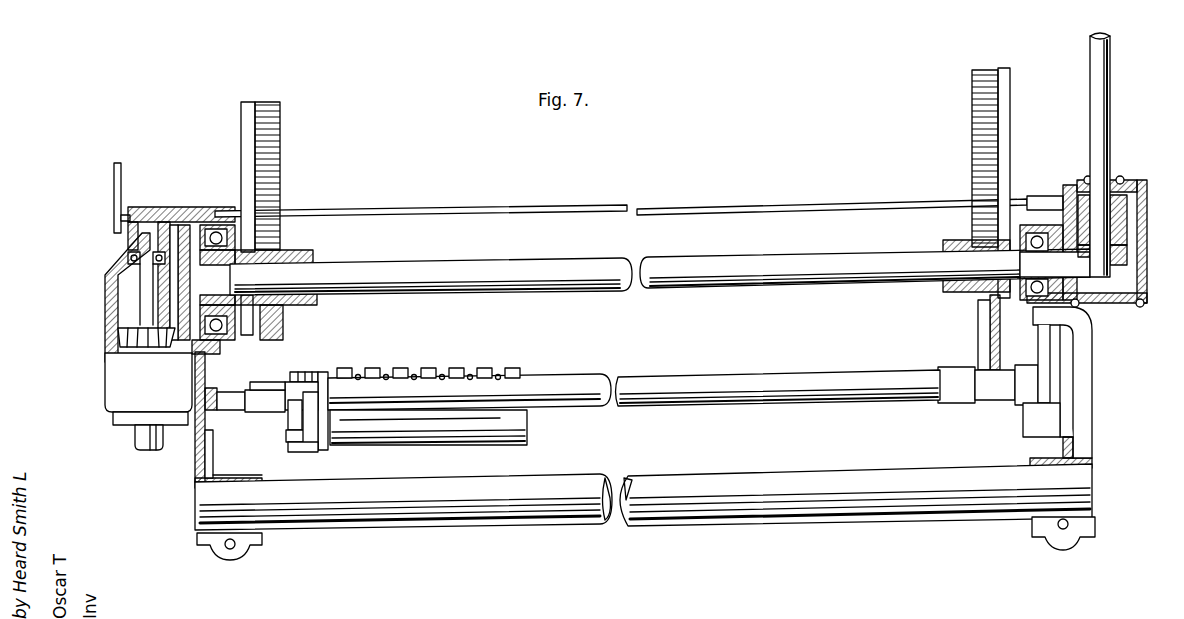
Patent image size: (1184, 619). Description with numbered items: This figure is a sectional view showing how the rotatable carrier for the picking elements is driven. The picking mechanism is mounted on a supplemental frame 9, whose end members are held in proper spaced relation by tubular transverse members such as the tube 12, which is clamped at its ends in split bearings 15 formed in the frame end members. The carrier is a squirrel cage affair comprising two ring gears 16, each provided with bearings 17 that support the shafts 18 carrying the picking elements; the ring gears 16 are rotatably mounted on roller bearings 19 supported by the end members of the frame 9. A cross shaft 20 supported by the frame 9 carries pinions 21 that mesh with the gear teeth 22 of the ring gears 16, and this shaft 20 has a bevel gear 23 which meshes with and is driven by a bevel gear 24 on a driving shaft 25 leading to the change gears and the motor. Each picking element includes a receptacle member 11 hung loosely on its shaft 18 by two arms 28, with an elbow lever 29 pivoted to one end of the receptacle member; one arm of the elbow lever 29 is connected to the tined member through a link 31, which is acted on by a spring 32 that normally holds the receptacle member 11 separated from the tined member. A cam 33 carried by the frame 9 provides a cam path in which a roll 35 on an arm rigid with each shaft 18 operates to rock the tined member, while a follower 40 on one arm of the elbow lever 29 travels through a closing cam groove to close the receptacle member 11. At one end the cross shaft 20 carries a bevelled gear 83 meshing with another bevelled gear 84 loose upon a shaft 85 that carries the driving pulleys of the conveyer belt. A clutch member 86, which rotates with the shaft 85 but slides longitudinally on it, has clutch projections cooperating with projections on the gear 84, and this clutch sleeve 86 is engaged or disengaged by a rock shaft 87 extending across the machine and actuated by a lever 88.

The supplemental frame 9 is at (1084, 390).
The receptacle member 11 is at (518, 428).
The transverse member 12 is at (500, 492).
The split bearing 15 is at (196, 480).
The ring gear 16 is at (273, 126).
The bearing 17 is at (257, 411).
The shaft 18 is at (713, 400).
The roller bearing 19 is at (283, 322).
The shaft 20 is at (441, 273).
The pinion 21 is at (283, 262).
The gear teeth 22 is at (268, 163).
The bevel gear 23 is at (172, 283).
The bevel gear 24 is at (112, 338).
The driving shaft 25 is at (148, 437).
The arm 28 is at (327, 396).
The elbow lever 29 is at (314, 444).
The link 31 is at (292, 443).
The spring 32 is at (305, 372).
The cam 33 is at (200, 425).
The roll 35 is at (214, 410).
The follower 40 is at (292, 418).
The bevelled gear 83 is at (1106, 248).
The bevelled gear 84 is at (1122, 222).
The shaft 85 is at (1103, 87).
The clutch member 86 is at (1120, 190).
The rock shaft 87 is at (781, 210).
The lever 88 is at (114, 184).